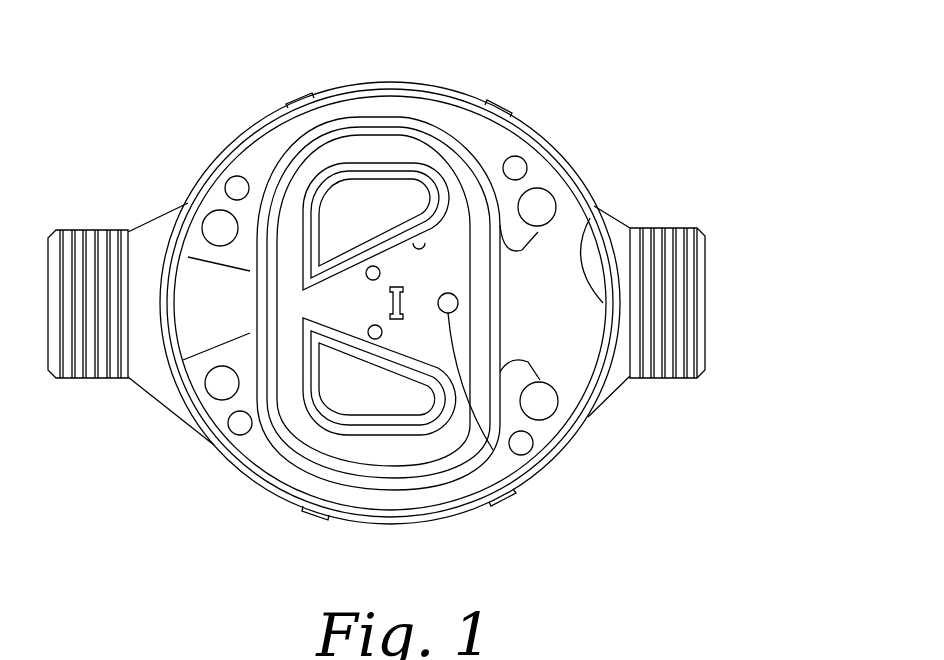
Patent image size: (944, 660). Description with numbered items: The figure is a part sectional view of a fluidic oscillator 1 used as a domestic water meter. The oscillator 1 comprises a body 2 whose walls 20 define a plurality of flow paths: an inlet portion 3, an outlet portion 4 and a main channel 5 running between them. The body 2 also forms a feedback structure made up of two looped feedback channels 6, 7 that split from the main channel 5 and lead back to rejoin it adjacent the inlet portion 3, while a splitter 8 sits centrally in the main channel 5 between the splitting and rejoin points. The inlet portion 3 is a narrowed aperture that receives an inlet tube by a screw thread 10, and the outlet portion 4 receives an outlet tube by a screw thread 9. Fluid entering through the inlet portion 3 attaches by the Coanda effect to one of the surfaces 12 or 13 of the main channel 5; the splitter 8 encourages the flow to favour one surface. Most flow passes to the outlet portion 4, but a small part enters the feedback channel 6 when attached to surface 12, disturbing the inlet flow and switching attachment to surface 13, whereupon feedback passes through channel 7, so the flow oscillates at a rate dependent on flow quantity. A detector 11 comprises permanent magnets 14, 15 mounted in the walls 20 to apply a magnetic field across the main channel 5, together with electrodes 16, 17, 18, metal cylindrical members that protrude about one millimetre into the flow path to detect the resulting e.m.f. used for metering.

The fluidic oscillator 1 is at (157, 94).
The body 2 is at (337, 118).
The inlet portion 3 is at (190, 263).
The outlet portion 4 is at (588, 217).
The main channel 5 is at (318, 380).
The feedback channel 6 is at (421, 153).
The feedback channel 7 is at (450, 445).
The splitter 8 is at (403, 318).
The screw thread 9 is at (676, 378).
The screw thread 10 is at (97, 378).
The detector 11 is at (367, 253).
The surface 12 is at (418, 248).
The surface 13 is at (340, 320).
The permanent magnet 14 is at (378, 207).
The permanent magnet 15 is at (372, 403).
The electrode 16 is at (366, 275).
The electrode 17 is at (371, 326).
The electrode 18 is at (506, 455).
The walls 20 is at (415, 215).